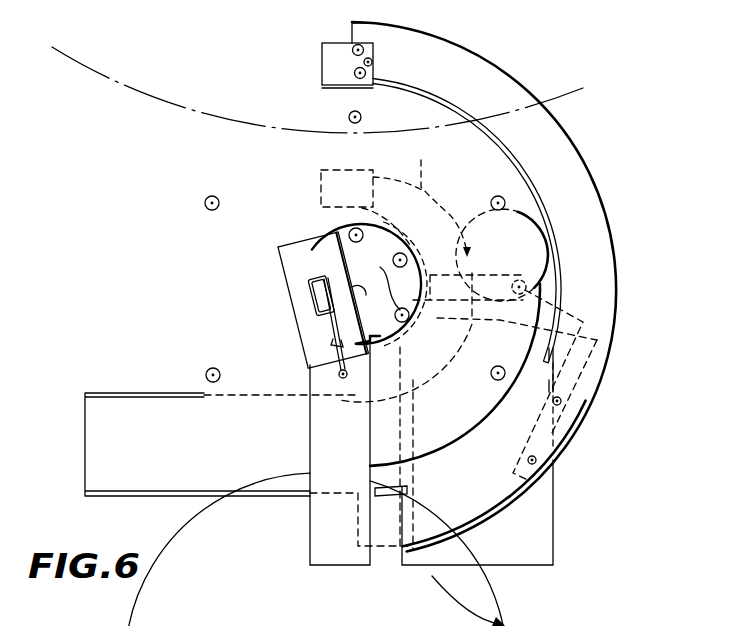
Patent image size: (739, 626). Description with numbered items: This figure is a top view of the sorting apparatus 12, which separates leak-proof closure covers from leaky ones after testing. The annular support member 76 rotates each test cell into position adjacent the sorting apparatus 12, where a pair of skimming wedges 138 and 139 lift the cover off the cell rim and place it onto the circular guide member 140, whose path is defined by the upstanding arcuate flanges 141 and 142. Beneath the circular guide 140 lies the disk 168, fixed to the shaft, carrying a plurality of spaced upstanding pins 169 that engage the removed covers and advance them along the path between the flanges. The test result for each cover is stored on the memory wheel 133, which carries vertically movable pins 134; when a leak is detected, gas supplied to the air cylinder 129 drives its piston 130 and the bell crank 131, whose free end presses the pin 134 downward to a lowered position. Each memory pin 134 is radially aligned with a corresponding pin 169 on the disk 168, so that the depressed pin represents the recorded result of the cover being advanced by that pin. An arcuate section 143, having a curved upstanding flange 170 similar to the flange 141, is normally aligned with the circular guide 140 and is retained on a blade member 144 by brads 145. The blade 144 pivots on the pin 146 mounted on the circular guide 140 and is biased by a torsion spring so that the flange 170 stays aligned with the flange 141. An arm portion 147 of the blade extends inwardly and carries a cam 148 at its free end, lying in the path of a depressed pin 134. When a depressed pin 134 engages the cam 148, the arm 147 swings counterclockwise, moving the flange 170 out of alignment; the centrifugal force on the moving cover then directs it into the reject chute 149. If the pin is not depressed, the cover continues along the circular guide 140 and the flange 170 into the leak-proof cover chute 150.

The sorting apparatus 12 is at (201, 163).
The annular support member 76 is at (151, 97).
The air cylinder 129 is at (325, 279).
The piston 130 is at (325, 325).
The bell crank 131 is at (333, 362).
The memory wheel 133 is at (390, 243).
The vertically movable pins 134 is at (393, 261).
The skimming wedge 138 is at (322, 68).
The skimming wedge 139 is at (338, 167).
The circular guide member 140 is at (576, 158).
The upstanding arcuate flange 141 is at (480, 136).
The upstanding arcuate flange 142 is at (434, 200).
The arcuate section 143 is at (573, 436).
The blade member 144 is at (612, 302).
The brads 145 is at (562, 401).
The pin 146 is at (528, 288).
The arm portion 147 is at (406, 437).
The cam 148 is at (425, 277).
The reject chute 149 is at (540, 507).
The leak-proof cover chute 150 is at (100, 468).
The disk 168 is at (238, 157).
The upstanding pins 169 is at (349, 118).
The curved upstanding flange 170 is at (455, 466).